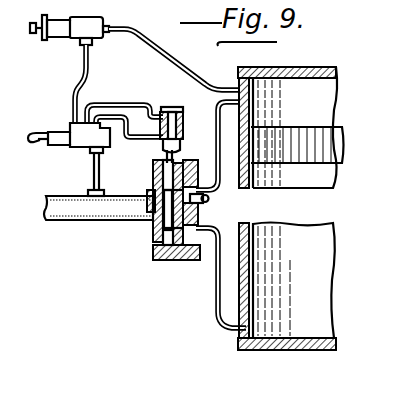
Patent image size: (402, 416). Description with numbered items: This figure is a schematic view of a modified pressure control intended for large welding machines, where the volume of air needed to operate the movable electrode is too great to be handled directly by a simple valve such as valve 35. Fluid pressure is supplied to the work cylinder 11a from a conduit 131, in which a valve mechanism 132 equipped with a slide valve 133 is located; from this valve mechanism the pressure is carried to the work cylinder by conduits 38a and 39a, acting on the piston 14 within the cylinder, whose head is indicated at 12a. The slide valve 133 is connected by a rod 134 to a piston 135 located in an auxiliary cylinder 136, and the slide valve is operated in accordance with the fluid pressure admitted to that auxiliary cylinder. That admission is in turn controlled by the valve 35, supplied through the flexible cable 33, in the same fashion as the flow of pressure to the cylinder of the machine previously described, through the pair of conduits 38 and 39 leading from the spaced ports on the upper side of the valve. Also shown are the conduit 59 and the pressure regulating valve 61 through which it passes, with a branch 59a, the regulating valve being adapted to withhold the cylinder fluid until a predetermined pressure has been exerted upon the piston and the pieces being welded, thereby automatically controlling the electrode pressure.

The pressure regulating valve 61 is at (60, 38).
The conduit 59 is at (73, 96).
The pipe 59a is at (127, 34).
The conduit 39 is at (115, 103).
The conduit 38 is at (131, 139).
The valve 35 is at (64, 148).
The flexible cable 33 is at (100, 169).
The conduit 131 is at (93, 221).
The valve mechanism 132 is at (153, 248).
The slide valve 133 is at (152, 236).
The rod 134 is at (178, 150).
The piston 135 is at (183, 124).
The auxiliary cylinder 136 is at (189, 103).
The conduit 38a is at (219, 154).
The work cylinder 11a is at (241, 226).
The conduit 39a is at (215, 302).
The piston 14 is at (297, 133).
The cylinder head 12a is at (280, 337).